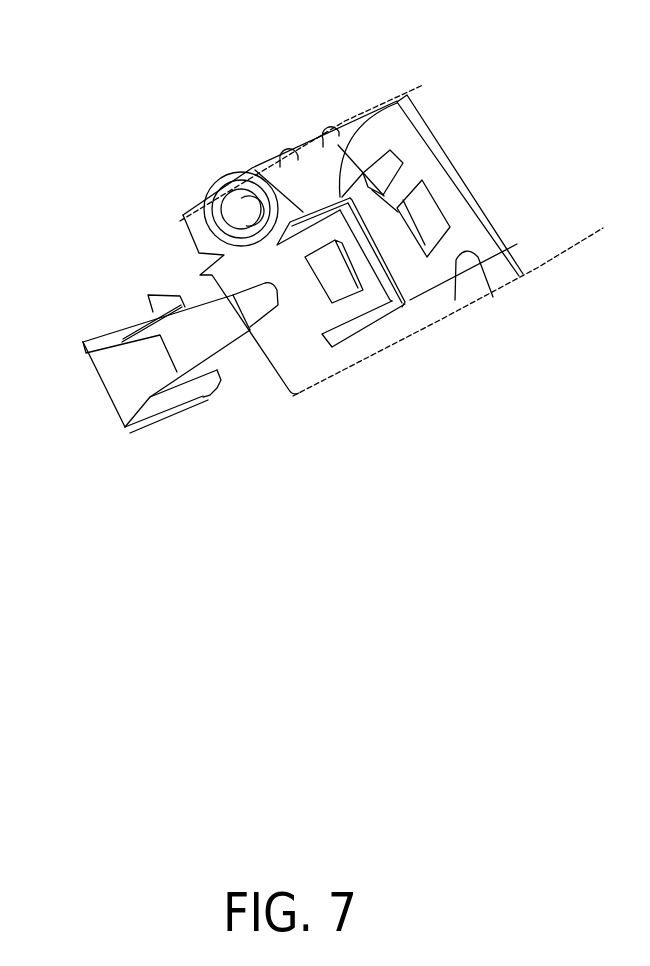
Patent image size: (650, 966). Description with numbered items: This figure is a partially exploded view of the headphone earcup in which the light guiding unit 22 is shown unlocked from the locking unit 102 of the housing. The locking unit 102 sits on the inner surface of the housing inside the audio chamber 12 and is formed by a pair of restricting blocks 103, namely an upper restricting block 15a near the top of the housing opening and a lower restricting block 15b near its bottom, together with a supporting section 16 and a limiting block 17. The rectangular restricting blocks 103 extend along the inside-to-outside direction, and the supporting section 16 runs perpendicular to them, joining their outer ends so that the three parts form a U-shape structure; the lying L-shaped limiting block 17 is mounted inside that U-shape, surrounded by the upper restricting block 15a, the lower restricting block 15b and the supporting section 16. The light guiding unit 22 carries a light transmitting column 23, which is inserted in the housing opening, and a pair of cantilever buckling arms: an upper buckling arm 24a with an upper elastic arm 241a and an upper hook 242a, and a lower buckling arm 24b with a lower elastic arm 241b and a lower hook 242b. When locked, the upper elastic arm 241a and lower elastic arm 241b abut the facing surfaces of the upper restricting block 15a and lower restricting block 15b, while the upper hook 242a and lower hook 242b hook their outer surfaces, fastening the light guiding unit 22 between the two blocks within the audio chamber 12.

The audio chamber 12 is at (353, 352).
The upper restricting block 15a is at (398, 100).
The lower restricting block 15b is at (416, 296).
The supporting section 16 is at (390, 252).
The limiting block 17 is at (340, 268).
The locking unit 102 is at (430, 306).
The restricting blocks 103 is at (312, 206).
The light guiding unit 22 is at (162, 352).
The light transmitting column 23 is at (266, 298).
The upper buckling arm 24a is at (131, 273).
The upper elastic arm 241a is at (118, 334).
The upper hook 242a is at (151, 295).
The lower buckling arm 24b is at (206, 434).
The lower elastic arm 241b is at (158, 405).
The lower hook 242b is at (216, 395).